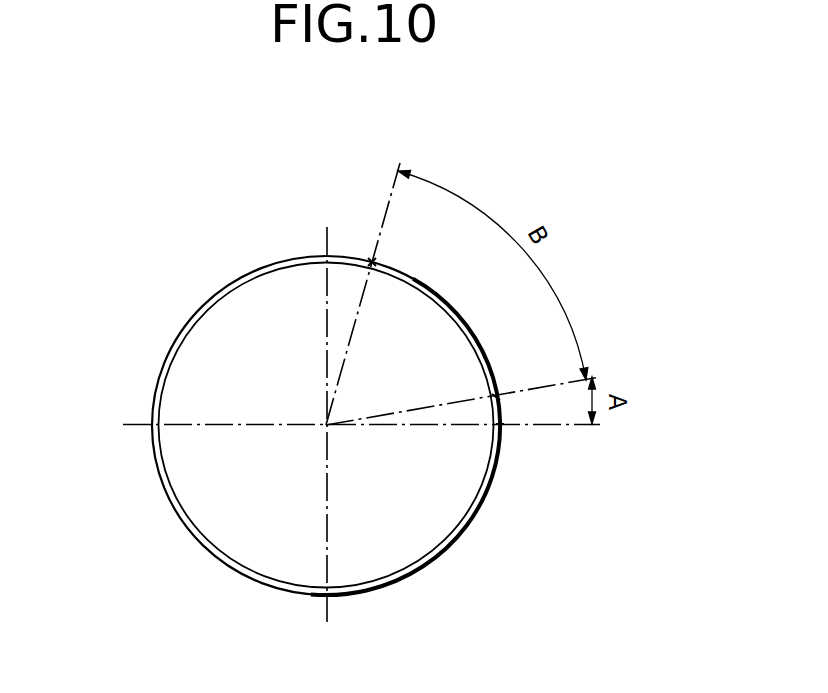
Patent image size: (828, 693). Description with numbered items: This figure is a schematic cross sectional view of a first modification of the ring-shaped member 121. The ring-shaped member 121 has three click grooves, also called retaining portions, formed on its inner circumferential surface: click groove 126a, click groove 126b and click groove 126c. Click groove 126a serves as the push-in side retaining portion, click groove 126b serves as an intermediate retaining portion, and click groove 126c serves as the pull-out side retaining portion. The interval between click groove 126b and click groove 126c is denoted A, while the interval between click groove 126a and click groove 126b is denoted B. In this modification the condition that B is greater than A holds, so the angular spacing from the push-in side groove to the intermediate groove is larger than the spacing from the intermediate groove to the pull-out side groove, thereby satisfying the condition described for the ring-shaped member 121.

The ring-shaped member 121 is at (180, 333).
The click groove 126a is at (372, 262).
The click groove 126b is at (496, 396).
The click groove 126c is at (500, 428).